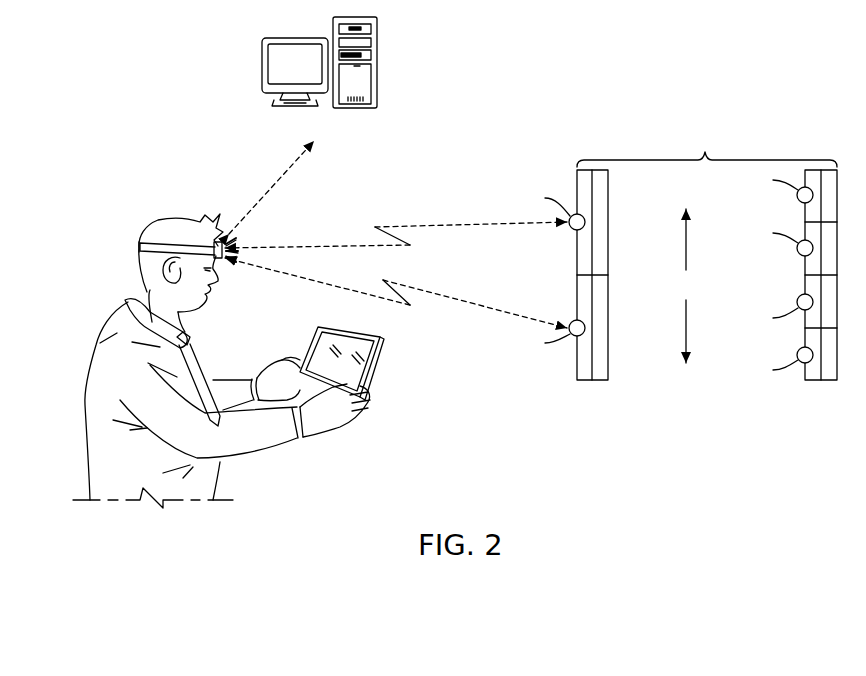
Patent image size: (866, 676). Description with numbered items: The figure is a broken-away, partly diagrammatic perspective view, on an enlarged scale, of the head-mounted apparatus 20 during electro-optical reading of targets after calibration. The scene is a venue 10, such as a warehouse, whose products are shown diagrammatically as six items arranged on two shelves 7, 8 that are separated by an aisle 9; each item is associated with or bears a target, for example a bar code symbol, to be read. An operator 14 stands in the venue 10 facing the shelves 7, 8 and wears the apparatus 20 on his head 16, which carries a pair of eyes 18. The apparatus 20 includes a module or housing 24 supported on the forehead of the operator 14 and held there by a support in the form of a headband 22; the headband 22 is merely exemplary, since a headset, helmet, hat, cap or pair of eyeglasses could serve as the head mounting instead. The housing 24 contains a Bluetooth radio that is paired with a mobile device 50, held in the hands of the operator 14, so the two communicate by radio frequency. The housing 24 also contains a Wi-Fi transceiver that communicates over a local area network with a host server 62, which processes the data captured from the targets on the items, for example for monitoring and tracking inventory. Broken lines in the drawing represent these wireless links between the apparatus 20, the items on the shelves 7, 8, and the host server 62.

The shelf 7 is at (600, 170).
The shelf 8 is at (816, 170).
The aisle 9 is at (693, 286).
The venue 10 is at (707, 148).
The operator 14 is at (83, 380).
The head 16 is at (181, 228).
The eyes 18 is at (206, 268).
The head-mounted apparatus 20 is at (138, 246).
The headband 22 is at (140, 262).
The housing 24 is at (224, 260).
The mobile device 50 is at (378, 357).
The host server 62 is at (332, 77).